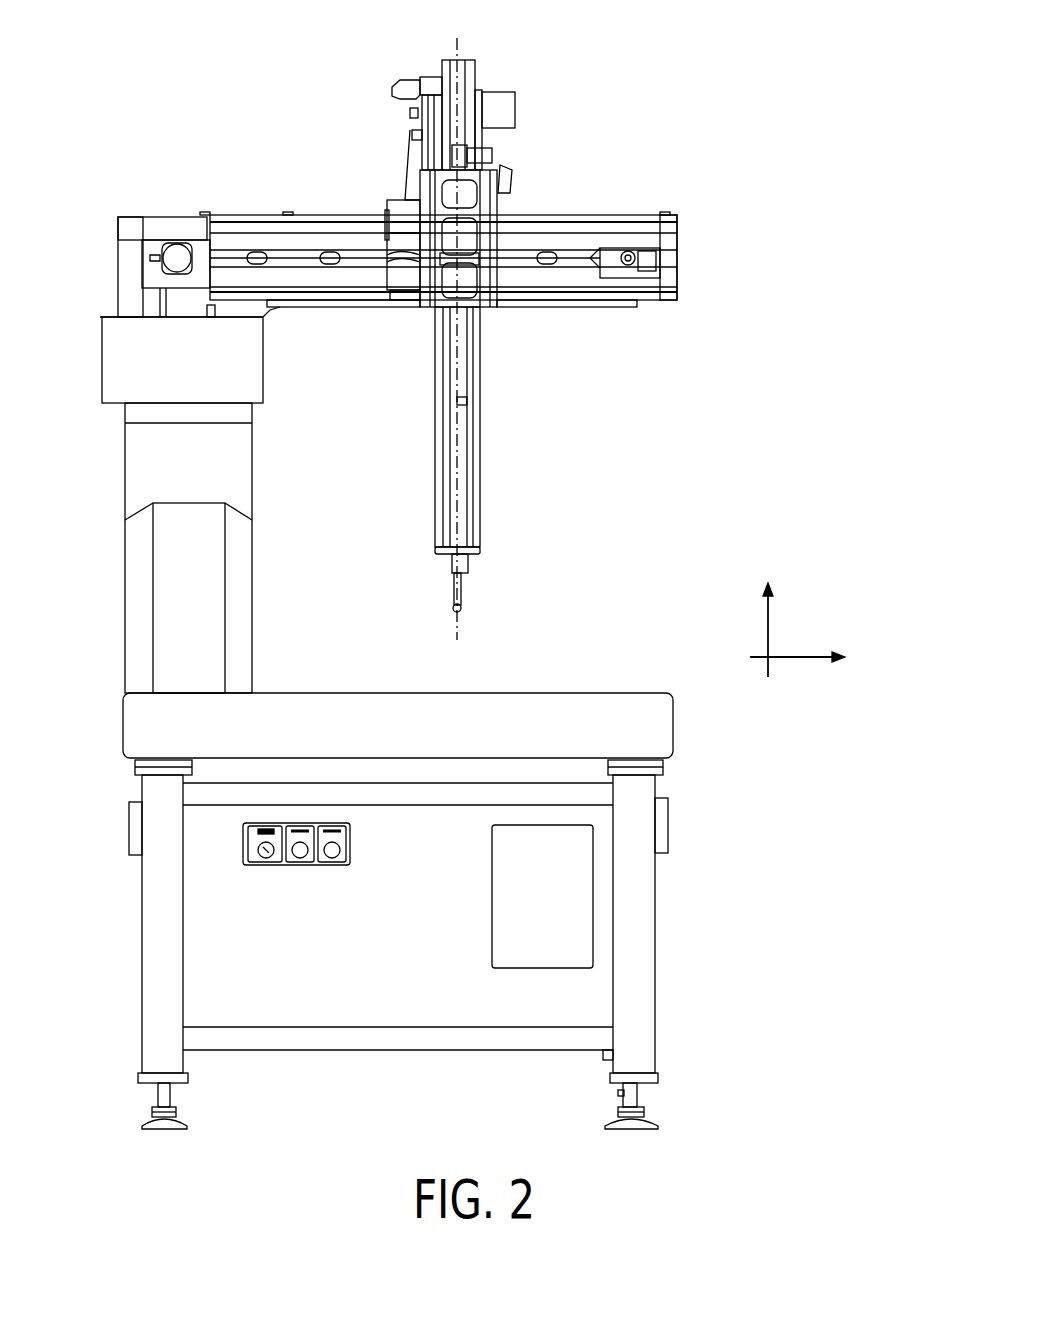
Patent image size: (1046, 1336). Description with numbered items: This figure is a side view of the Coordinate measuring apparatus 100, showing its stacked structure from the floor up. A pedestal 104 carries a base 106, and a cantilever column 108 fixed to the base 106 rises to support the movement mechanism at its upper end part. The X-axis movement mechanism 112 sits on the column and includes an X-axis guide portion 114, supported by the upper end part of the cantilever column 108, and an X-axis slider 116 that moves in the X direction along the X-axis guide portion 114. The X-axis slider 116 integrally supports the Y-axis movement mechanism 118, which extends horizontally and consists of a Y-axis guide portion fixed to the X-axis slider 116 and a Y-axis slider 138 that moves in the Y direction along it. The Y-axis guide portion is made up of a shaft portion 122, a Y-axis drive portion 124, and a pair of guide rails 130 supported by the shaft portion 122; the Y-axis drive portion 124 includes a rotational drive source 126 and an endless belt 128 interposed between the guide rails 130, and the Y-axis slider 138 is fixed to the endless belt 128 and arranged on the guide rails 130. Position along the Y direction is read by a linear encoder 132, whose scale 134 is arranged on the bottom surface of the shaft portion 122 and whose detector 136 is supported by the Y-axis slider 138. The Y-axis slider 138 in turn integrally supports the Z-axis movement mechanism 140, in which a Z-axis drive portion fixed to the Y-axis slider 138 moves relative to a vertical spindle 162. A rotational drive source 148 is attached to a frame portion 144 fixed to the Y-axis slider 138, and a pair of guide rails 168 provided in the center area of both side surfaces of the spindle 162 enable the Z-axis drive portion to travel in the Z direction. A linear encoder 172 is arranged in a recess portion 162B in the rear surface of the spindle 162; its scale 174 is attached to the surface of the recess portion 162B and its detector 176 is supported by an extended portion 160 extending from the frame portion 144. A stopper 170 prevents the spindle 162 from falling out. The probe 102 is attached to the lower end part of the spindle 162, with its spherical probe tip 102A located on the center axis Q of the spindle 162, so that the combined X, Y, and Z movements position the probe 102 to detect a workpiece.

The Coordinate measuring apparatus 100 is at (718, 82).
The probe 102 is at (468, 592).
The probe tip 102A is at (462, 607).
The pedestal 104 is at (462, 960).
The base 106 is at (522, 742).
The cantilever column 108 is at (204, 589).
The X-axis movement mechanism 112 is at (273, 382).
The X-axis guide portion 114 is at (196, 370).
The X-axis slider 116 is at (122, 300).
The Y-axis movement mechanism 118 is at (637, 190).
The shaft portion 122 is at (660, 260).
The Y-axis drive portion 124 is at (155, 170).
The rotational drive source 126 is at (172, 232).
The endless belt 128 is at (257, 255).
The guide rails 130 is at (573, 218).
The linear encoder 132 is at (382, 360).
The scale 134 is at (336, 308).
The detector 136 is at (414, 300).
The Y-axis slider 138 is at (380, 212).
The Z-axis movement mechanism 140 is at (567, 100).
The frame portion 144 is at (430, 205).
The rotational drive source 148 is at (503, 112).
The extended portion 160 is at (480, 154).
The spindle 162 is at (468, 495).
The recess portion 162B is at (465, 450).
The guide rails 168 is at (477, 535).
The stopper 170 is at (418, 85).
The linear encoder 172 is at (497, 340).
The scale 174 is at (457, 395).
The detector 176 is at (458, 152).